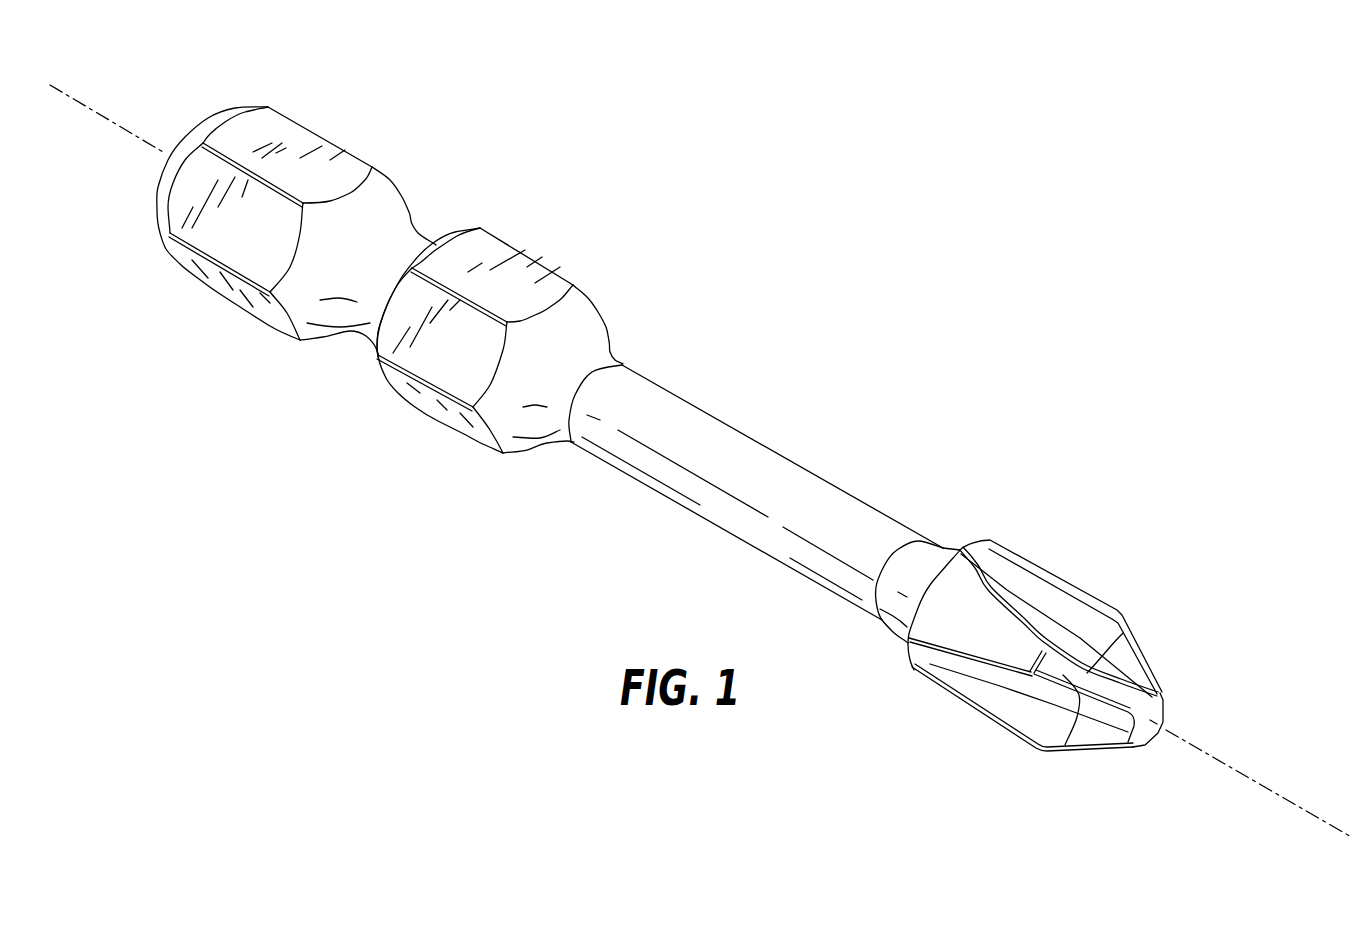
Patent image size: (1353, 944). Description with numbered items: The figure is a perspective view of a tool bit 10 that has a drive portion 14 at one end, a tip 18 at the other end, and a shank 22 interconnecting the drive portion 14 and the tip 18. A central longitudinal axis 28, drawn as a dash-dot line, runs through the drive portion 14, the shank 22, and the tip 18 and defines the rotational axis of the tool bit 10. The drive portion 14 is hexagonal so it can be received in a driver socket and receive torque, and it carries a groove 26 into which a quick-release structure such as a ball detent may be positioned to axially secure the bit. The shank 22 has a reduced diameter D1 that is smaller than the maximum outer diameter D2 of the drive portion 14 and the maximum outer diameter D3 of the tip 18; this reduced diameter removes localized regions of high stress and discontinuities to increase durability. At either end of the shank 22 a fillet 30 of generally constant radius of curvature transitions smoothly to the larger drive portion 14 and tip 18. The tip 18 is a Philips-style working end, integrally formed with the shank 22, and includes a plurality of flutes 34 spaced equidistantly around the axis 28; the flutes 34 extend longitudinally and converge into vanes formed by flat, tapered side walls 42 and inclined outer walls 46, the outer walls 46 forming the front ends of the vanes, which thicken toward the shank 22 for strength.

The tool bit 10 is at (817, 280).
The drive portion 14 is at (397, 153).
The tip 18 is at (1147, 597).
The shank 22 is at (695, 402).
The groove 26 is at (410, 235).
The central longitudinal axis 28 is at (130, 128).
The fillet 30 is at (577, 338).
The flutes 34 is at (1010, 600).
The tapered side walls 42 is at (1083, 613).
The outer walls 46 is at (1060, 675).
The reduced diameter D1 is at (705, 577).
The maximum outer diameter of the drive portion D2 is at (195, 337).
The maximum outer diameter of the tip D3 is at (900, 727).